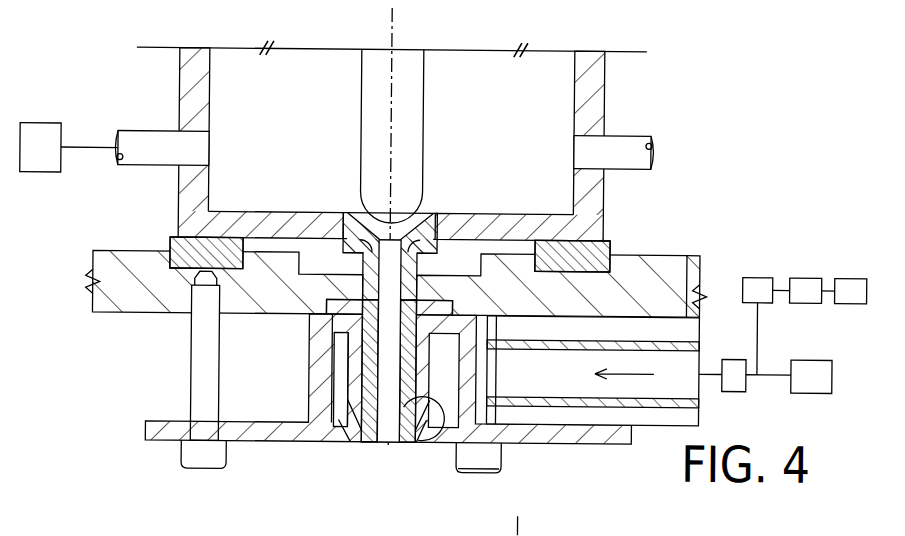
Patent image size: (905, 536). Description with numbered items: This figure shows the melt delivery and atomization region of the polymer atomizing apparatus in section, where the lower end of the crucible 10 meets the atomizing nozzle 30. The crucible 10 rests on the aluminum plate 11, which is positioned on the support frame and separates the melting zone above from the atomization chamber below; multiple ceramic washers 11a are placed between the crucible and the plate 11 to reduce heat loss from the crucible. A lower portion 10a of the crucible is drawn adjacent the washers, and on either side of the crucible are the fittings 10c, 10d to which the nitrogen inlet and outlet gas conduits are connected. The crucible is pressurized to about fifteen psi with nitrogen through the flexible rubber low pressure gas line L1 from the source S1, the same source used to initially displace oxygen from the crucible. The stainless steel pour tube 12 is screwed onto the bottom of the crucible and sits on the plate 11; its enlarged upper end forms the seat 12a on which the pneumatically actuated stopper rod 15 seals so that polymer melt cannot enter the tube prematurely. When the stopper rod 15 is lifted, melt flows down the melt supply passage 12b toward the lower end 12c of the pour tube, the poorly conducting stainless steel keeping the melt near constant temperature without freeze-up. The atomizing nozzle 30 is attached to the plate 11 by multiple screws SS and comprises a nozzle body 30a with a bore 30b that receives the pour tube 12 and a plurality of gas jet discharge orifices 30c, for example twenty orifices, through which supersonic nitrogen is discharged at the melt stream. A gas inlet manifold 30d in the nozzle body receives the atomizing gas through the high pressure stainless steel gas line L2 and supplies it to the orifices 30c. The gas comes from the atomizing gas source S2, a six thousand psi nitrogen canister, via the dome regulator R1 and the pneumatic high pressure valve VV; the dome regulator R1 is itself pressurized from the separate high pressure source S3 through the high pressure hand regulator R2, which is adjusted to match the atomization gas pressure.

The crucible 10 is at (606, 91).
The flange of housing 10a is at (560, 208).
The fitting 10c is at (153, 132).
The fitting 10d is at (650, 140).
The aluminum plate 11 is at (628, 262).
The ceramic washers 11a is at (172, 240).
The pour tube 12 is at (412, 442).
The seat 12a is at (370, 215).
The melt supply passage 12b is at (345, 436).
The nozzle tip 12c is at (362, 440).
The stopper rod 15 is at (412, 122).
The atomizing nozzle 30 is at (277, 447).
The nozzle body 30a is at (313, 418).
The bore 30b is at (365, 362).
The gas jet discharge orifices 30c is at (337, 440).
The gas inlet manifold 30d is at (478, 371).
The source S1 is at (44, 126).
The atomizing gas source S2 is at (815, 390).
The high pressure source S3 is at (870, 247).
The dome regulator R1 is at (760, 247).
The high pressure hand regulator R2 is at (818, 247).
The flexible rubber low pressure gas line L1 is at (82, 152).
The high pressure stainless steel gas line L2 is at (710, 376).
The pneumatic high pressure valve VV is at (737, 357).
The screws SS is at (200, 356).